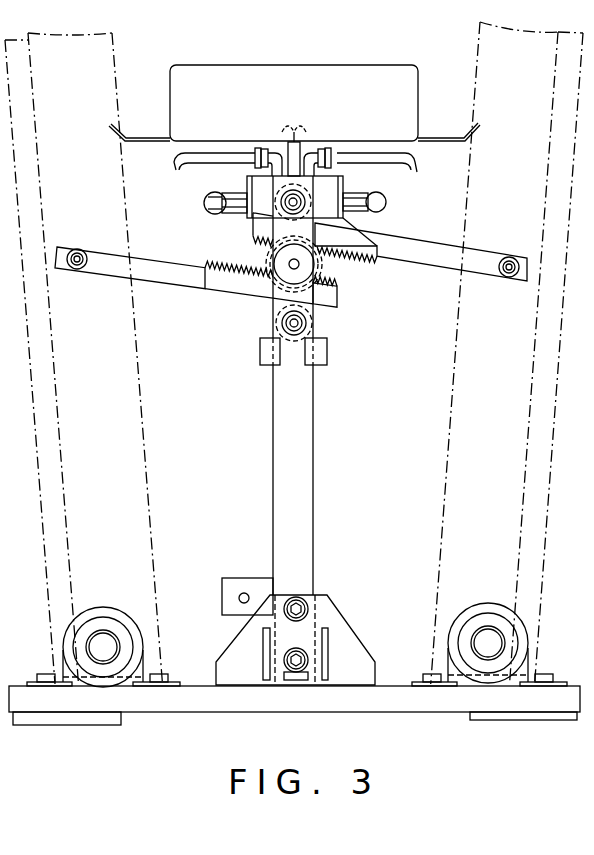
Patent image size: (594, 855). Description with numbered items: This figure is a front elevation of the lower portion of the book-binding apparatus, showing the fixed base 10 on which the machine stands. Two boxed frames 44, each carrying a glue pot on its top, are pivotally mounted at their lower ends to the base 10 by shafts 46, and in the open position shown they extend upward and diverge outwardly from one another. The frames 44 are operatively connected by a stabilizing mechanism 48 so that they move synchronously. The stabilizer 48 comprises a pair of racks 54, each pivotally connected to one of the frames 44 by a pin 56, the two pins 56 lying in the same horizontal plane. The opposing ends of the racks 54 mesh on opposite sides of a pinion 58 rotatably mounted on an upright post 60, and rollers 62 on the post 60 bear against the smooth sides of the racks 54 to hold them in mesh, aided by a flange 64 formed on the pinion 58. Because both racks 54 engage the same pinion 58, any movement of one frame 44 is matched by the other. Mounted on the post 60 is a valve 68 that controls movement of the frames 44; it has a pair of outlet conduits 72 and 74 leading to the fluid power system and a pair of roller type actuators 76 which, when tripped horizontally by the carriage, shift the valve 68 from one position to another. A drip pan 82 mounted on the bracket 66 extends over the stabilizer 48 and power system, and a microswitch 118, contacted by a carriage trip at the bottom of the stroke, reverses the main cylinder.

The fixed base 10 is at (418, 712).
The boxed frame 44 is at (457, 408).
The shaft 46 is at (108, 648).
The stabilizing mechanism 48 is at (305, 281).
The rack 54 is at (177, 285).
The pin 56 is at (78, 270).
The pinion 58 is at (270, 260).
The upright post 60 is at (313, 450).
The roller 62 is at (307, 192).
The flange 64 is at (318, 266).
The bracket 66 is at (262, 350).
The valve 68 is at (345, 218).
The outlet conduit 72 is at (172, 166).
The outlet conduit 74 is at (418, 163).
The roller type actuator 76 is at (212, 210).
The drip pan 82 is at (172, 110).
The microswitch 118 is at (240, 578).